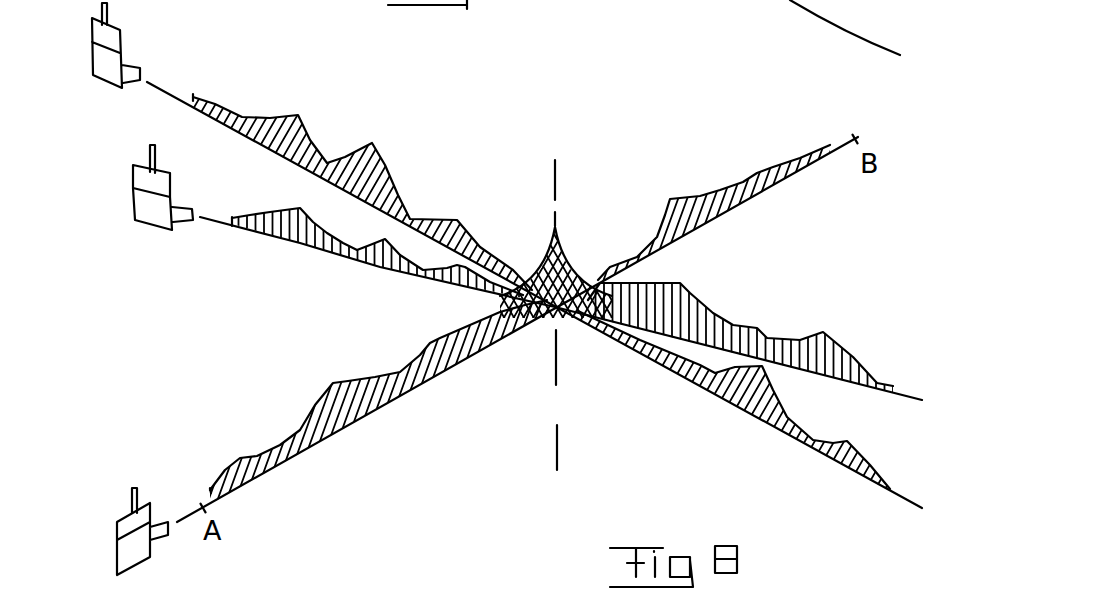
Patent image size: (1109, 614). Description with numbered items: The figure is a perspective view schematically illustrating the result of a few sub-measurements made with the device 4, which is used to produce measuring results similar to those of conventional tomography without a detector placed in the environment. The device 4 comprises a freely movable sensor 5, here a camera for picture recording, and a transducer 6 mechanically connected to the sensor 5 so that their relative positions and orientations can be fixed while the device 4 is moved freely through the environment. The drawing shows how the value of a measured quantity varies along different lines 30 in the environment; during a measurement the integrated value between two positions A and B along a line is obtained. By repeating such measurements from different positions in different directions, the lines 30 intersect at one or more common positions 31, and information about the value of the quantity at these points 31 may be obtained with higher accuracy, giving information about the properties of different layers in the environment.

The device 4 is at (126, 234).
The sensor 5 is at (158, 217).
The transducer 6 is at (148, 181).
The lines 30 is at (242, 133).
The common positions 31 is at (560, 307).